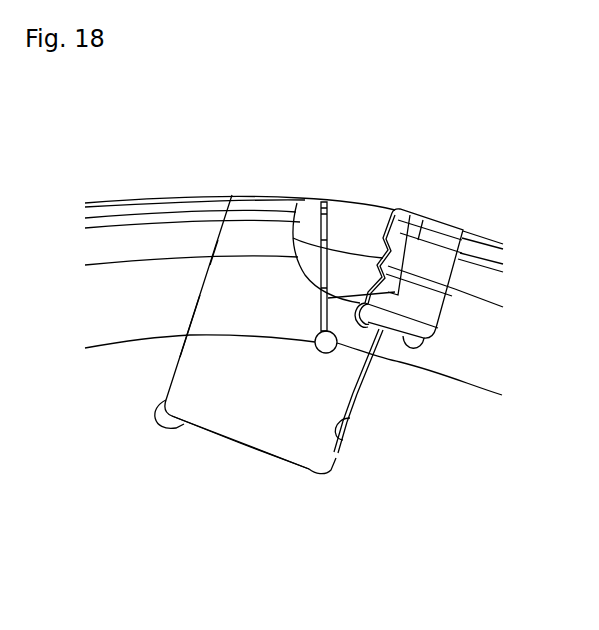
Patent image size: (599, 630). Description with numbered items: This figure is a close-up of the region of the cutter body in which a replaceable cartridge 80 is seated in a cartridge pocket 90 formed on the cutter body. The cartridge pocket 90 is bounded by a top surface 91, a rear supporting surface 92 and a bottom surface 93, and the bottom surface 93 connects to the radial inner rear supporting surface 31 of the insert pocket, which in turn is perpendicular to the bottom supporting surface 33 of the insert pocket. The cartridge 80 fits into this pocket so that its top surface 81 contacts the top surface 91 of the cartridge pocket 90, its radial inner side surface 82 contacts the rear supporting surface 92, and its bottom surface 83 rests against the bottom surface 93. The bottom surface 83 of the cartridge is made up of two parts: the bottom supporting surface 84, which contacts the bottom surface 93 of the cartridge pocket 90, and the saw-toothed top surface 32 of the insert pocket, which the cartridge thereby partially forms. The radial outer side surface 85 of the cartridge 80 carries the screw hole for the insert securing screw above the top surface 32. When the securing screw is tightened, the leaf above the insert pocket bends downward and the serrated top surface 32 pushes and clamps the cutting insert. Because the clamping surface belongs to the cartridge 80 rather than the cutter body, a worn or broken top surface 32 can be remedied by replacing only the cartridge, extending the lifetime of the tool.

The cartridge 80 is at (261, 311).
The top surface of the cartridge 81 is at (205, 298).
The radial inner side surface of the cartridge 82 is at (246, 437).
The bottom surface of the cartridge 83 is at (347, 388).
The bottom supporting surface 84 is at (348, 448).
The radial outer side surface of the cartridge 85 is at (320, 201).
The cartridge pocket 90 is at (338, 472).
The top surface of the cartridge pocket 91 is at (197, 293).
The rear supporting surface of the cartridge pocket 92 is at (260, 455).
The bottom surface of the cartridge pocket 93 is at (361, 407).
The radial inner rear supporting surface 31 is at (396, 338).
The top surface of the insert pocket 32 is at (381, 224).
The bottom supporting surface 33 is at (446, 310).